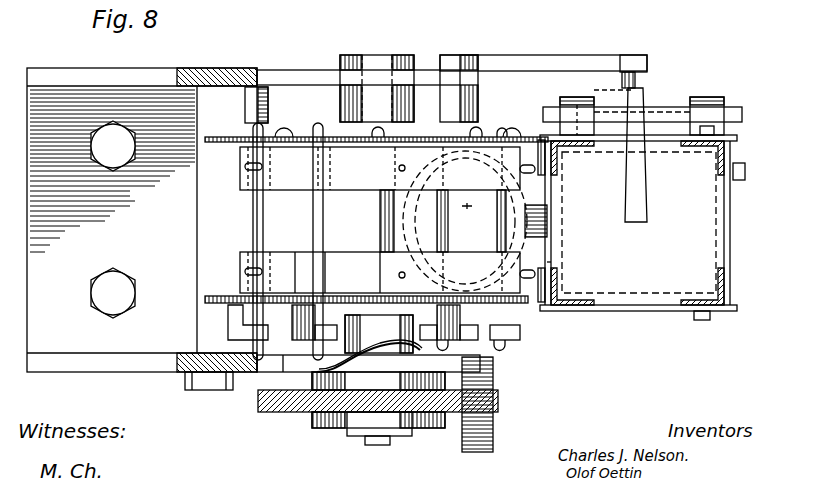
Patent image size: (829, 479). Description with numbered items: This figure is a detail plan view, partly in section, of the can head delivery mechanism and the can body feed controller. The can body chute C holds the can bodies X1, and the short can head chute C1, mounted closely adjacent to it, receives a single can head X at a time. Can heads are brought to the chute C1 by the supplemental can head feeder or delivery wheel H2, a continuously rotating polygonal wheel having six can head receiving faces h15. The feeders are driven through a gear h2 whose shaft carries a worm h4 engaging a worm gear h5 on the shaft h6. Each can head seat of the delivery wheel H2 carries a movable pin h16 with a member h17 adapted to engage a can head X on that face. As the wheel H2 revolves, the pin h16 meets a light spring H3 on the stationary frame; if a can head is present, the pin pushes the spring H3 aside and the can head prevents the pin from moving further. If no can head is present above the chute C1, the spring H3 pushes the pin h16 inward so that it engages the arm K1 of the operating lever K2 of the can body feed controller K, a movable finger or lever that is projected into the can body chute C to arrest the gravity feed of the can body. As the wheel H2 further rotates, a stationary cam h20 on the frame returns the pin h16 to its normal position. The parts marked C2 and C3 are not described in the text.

The stationary cam h20 is at (258, 103).
The operating lever K2 is at (624, 72).
The arm of the operating lever K1 is at (437, 125).
The movable pin h16 is at (262, 232).
The can head receiving faces h15 is at (277, 177).
The supplemental can head feeder or delivery wheel H2 is at (333, 247).
The shaft h6 is at (386, 240).
The can head X is at (466, 200).
The member of the movable pin h17 is at (458, 328).
The light spring H3 is at (392, 345).
The worm gear h5 is at (270, 410).
The worm h4 is at (374, 442).
The gear h2 is at (494, 371).
The can head chute C1 is at (532, 137).
The lever block C2 is at (548, 223).
The lever pivot C3 is at (547, 262).
The can body chute C is at (727, 148).
The can body X1 is at (641, 291).
The can body feed controller K is at (648, 210).